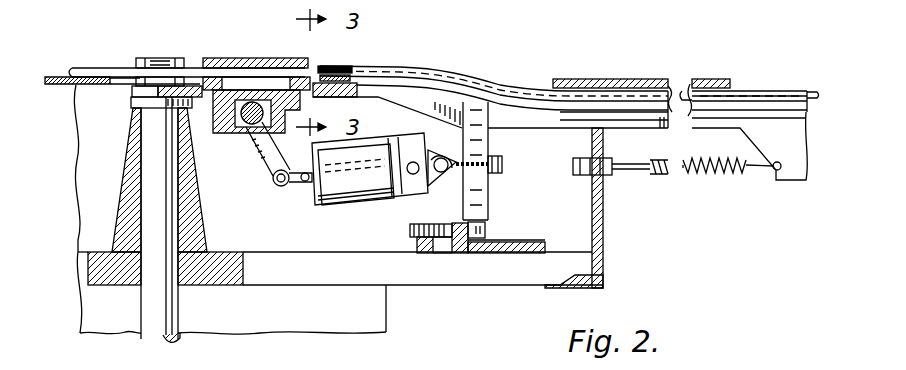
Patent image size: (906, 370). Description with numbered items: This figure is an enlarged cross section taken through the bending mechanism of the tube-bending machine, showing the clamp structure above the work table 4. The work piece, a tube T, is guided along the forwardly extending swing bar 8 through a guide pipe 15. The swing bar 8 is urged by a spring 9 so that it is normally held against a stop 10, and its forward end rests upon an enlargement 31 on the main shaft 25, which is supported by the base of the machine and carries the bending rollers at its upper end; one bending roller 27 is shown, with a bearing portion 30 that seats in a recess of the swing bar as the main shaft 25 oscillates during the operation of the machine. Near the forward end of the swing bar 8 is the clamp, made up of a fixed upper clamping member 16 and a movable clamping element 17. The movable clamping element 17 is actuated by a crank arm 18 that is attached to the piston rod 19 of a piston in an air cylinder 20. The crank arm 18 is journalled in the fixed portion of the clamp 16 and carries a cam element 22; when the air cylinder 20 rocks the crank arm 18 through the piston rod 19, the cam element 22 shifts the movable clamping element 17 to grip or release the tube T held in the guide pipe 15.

The work table 4 is at (565, 79).
The swing bar 8 is at (713, 128).
The spring 9 is at (659, 174).
The stop 10 is at (463, 219).
The guide pipe 15 is at (468, 73).
The upper clamping member 16 is at (246, 57).
The movable clamping element 17 is at (240, 134).
The crank arm 18 is at (262, 178).
The piston rod 19 is at (300, 184).
The air cylinder 20 is at (350, 198).
The cam element 22 is at (266, 140).
The main shaft 25 is at (146, 333).
The bending roller 27 is at (140, 62).
The bearing portion 30 is at (146, 92).
The enlargement 31 is at (133, 103).
The tube T is at (672, 94).